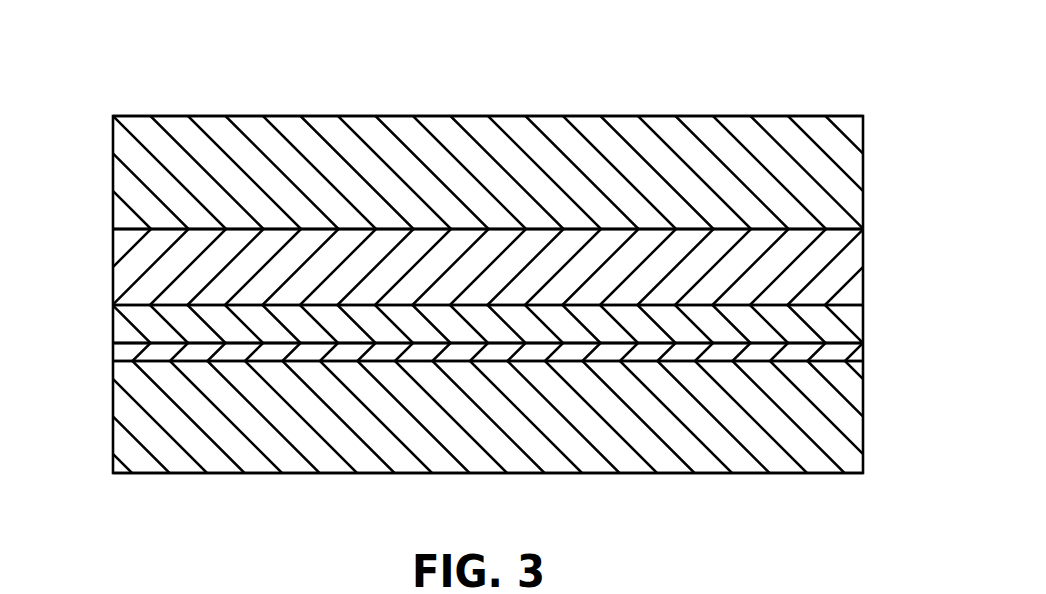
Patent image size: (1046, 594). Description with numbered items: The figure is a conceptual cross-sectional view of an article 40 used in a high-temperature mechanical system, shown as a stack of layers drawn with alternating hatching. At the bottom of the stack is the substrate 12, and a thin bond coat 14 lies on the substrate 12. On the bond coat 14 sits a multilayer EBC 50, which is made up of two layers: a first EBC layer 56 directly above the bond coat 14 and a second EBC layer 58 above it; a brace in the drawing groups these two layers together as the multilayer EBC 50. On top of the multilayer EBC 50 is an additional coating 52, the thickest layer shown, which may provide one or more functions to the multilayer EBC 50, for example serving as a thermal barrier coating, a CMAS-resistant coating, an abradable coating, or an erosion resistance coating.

The article 40 is at (79, 58).
The additional coating 52 is at (133, 175).
The second EBC layer 58 is at (133, 242).
The first EBC layer 56 is at (133, 319).
The bond coat 14 is at (133, 356).
The substrate 12 is at (133, 402).
The multilayer EBC 50 is at (910, 229).